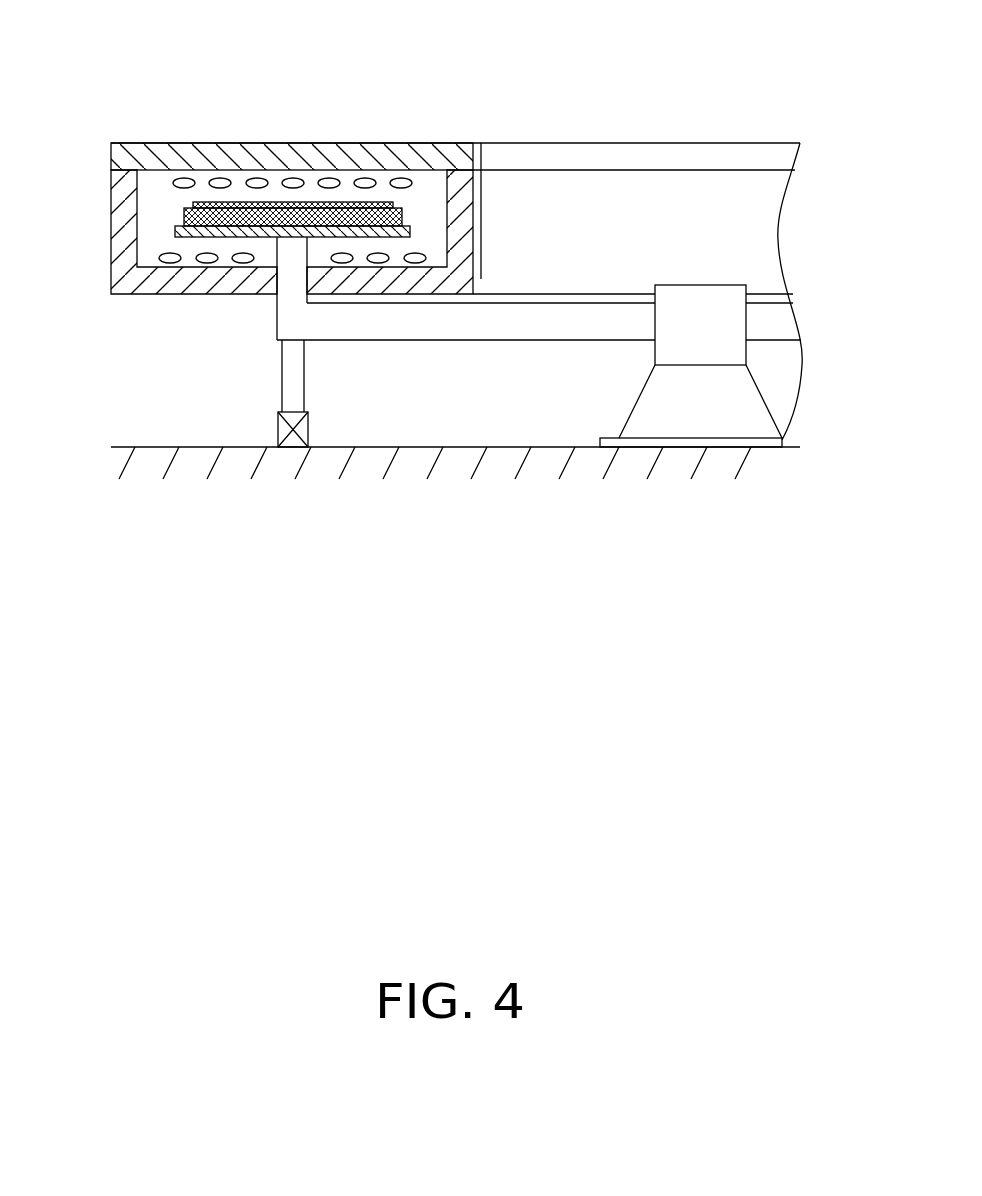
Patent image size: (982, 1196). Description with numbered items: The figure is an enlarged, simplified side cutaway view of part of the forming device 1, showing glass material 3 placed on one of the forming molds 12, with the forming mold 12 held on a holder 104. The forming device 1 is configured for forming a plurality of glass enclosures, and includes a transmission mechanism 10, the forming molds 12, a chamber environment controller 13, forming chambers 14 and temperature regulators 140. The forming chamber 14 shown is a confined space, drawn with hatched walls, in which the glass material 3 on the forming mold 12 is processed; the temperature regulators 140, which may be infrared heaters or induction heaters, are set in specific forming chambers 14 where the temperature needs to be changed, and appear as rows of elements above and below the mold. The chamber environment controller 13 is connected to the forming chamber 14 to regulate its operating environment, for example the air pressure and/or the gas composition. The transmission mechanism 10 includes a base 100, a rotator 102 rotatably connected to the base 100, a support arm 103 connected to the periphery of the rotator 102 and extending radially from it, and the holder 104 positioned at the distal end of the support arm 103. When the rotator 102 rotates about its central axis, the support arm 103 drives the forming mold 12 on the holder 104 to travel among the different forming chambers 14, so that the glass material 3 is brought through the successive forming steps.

The forming device 1 is at (125, 58).
The glass material 3 is at (213, 206).
The transmission mechanism 10 is at (580, 350).
The forming mold 12 is at (183, 218).
The chamber environment controller 13 is at (284, 428).
The forming chamber 14 is at (418, 157).
The base 100 is at (752, 410).
The rotator 102 is at (723, 295).
The support arm 103 is at (412, 325).
The holder 104 is at (176, 229).
The temperature regulator 140 is at (293, 178).